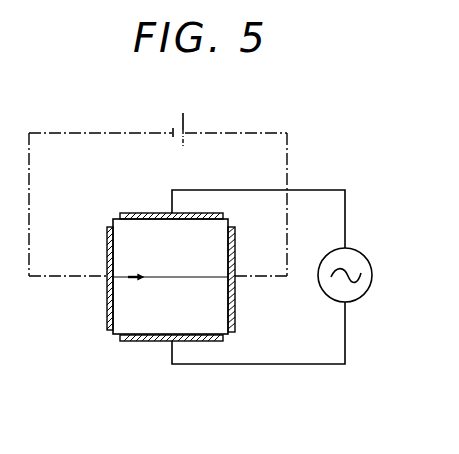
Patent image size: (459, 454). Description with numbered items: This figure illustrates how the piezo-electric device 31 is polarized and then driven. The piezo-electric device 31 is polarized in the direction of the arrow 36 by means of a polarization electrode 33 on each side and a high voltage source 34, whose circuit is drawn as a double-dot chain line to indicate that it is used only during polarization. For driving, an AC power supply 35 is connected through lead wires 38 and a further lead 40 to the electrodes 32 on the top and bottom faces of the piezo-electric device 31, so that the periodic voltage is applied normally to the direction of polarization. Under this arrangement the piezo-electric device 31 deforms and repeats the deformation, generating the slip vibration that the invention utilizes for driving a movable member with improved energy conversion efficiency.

The piezo-electric device 31 is at (125, 297).
The electrodes 32 is at (147, 213).
The polarization electrode 33 is at (107, 250).
The high voltage source 34 is at (185, 121).
The AC power supply 35 is at (368, 262).
The arrow 36 is at (157, 277).
The lead wires 38 is at (322, 190).
The drive lead wire 40 is at (248, 364).